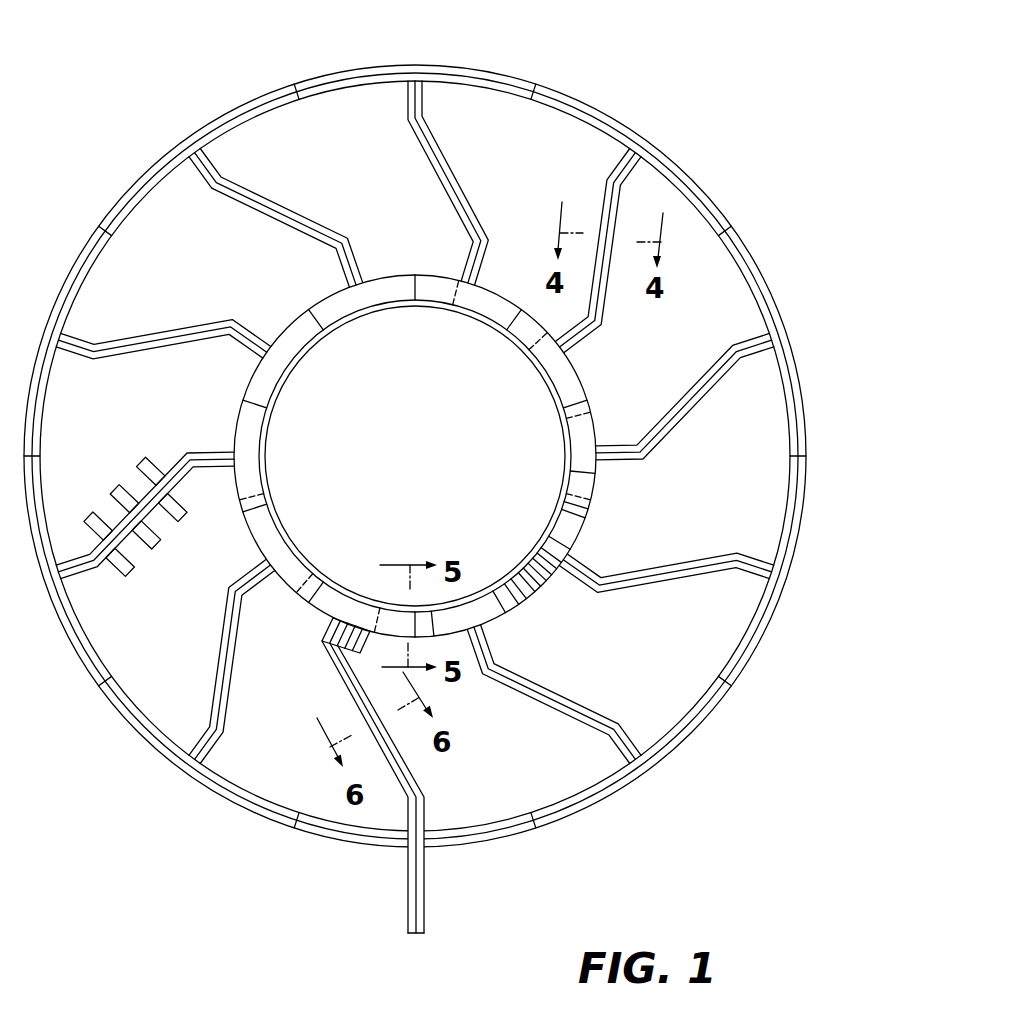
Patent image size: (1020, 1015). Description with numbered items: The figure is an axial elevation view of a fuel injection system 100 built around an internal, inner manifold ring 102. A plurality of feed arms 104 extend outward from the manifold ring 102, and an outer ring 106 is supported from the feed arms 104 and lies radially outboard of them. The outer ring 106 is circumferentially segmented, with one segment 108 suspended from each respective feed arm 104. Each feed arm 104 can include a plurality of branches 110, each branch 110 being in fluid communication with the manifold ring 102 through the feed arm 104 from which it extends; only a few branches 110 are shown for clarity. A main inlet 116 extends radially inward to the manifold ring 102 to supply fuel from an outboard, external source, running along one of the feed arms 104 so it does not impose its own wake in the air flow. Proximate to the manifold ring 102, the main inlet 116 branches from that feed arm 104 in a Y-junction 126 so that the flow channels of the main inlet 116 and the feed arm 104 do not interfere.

The system 100 is at (461, 471).
The inner manifold ring 102 is at (247, 482).
The feed arms 104 is at (267, 197).
The outer ring 106 is at (728, 205).
The segment 108 is at (457, 66).
The branches 110 is at (152, 462).
The main inlet 116 is at (331, 775).
The Y-junction 126 is at (318, 651).